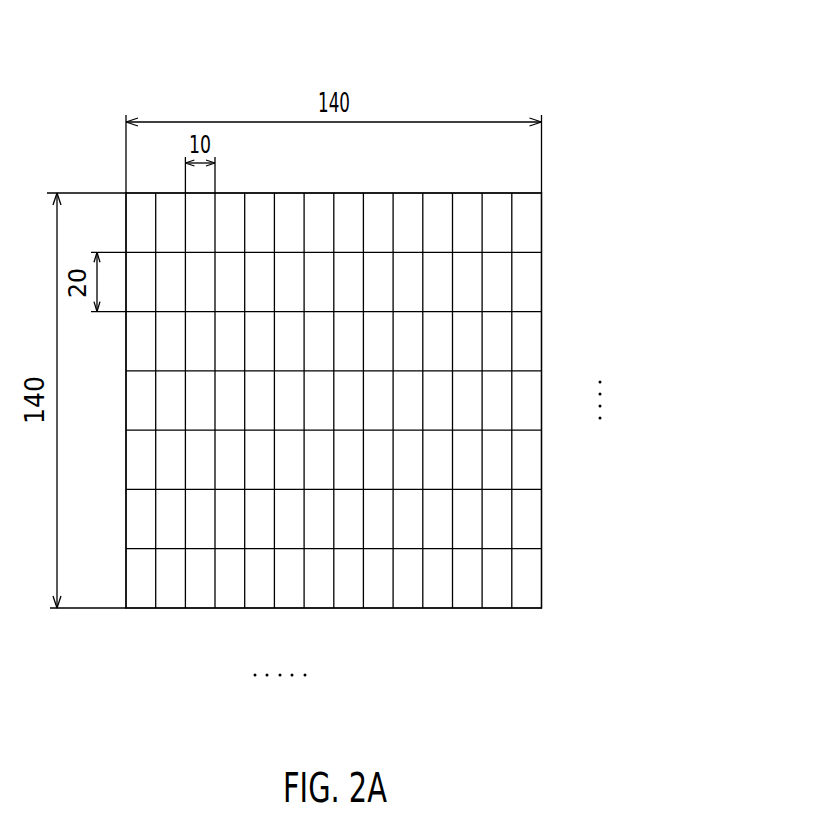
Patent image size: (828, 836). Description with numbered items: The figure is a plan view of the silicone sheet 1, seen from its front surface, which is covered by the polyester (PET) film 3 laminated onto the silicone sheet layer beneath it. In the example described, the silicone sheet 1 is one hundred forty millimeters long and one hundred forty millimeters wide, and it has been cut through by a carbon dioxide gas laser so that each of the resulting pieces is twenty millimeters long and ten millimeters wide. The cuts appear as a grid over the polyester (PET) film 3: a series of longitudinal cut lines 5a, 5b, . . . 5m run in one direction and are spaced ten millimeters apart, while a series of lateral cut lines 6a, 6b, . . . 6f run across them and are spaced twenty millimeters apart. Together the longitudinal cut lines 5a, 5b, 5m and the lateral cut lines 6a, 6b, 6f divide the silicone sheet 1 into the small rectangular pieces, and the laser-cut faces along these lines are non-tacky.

The silicone sheet 1 is at (488, 82).
The polyester (PET) film 3 is at (529, 216).
The longitudinal cut line 5a is at (155, 610).
The longitudinal cut line 5b is at (185, 610).
The longitudinal cut line 5m is at (511, 610).
The lateral cut line 6a is at (542, 548).
The lateral cut line 6b is at (542, 489).
The lateral cut line 6f is at (542, 252).